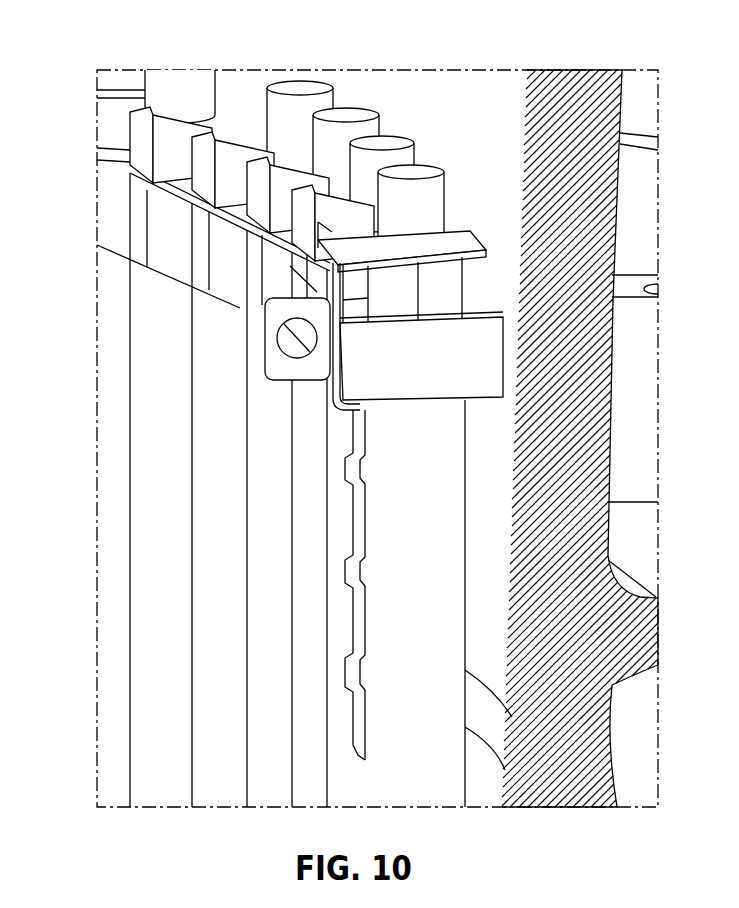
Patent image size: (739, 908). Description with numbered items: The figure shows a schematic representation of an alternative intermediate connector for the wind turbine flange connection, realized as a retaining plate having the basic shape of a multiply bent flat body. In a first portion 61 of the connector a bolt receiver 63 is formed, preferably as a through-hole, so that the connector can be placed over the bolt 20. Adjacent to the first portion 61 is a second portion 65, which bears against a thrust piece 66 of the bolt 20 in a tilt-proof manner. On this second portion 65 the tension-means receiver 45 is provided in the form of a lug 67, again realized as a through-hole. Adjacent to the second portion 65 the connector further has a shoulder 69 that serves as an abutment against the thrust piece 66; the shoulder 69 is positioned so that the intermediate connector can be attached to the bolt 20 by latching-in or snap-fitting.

The bolt 20 is at (427, 193).
The first portion 61 is at (462, 237).
The bolt receiver 63 is at (462, 267).
The second portion 65 is at (320, 278).
The thrust piece 66 is at (470, 368).
The lug 67 is at (181, 343).
The tension-means receiver 45 is at (290, 345).
The shoulder 69 is at (340, 432).